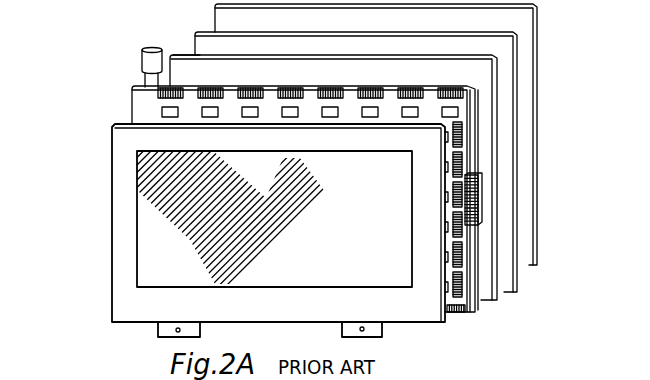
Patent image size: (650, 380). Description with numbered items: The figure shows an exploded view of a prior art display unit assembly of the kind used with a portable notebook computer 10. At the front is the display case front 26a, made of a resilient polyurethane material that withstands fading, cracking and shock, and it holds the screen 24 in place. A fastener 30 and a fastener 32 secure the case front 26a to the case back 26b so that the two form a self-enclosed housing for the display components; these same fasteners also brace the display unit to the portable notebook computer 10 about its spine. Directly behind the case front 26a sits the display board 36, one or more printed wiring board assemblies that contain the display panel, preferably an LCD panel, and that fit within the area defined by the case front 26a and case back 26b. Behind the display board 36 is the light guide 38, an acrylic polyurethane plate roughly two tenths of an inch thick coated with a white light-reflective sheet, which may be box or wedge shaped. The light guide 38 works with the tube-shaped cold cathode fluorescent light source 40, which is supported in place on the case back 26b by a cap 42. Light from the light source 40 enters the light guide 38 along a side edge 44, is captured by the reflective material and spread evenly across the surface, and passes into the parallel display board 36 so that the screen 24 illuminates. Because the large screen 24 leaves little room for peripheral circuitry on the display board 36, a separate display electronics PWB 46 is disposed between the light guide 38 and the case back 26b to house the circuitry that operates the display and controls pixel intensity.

The portable notebook computer 10 is at (78, 7).
The screen 24 is at (168, 196).
The display case front 26a is at (119, 261).
The case back 26b is at (528, 256).
The fastener 30 is at (164, 330).
The fastener 32 is at (376, 330).
The display board 36 is at (477, 314).
The light guide 38 is at (490, 299).
The light source 40 is at (144, 82).
The cap 42 is at (153, 48).
The edge 44 is at (170, 60).
The display electronics PWB 46 is at (510, 286).